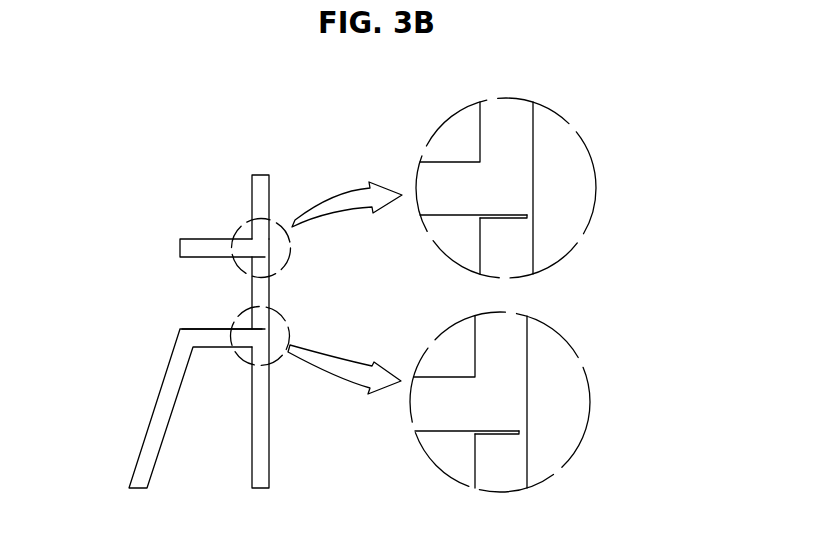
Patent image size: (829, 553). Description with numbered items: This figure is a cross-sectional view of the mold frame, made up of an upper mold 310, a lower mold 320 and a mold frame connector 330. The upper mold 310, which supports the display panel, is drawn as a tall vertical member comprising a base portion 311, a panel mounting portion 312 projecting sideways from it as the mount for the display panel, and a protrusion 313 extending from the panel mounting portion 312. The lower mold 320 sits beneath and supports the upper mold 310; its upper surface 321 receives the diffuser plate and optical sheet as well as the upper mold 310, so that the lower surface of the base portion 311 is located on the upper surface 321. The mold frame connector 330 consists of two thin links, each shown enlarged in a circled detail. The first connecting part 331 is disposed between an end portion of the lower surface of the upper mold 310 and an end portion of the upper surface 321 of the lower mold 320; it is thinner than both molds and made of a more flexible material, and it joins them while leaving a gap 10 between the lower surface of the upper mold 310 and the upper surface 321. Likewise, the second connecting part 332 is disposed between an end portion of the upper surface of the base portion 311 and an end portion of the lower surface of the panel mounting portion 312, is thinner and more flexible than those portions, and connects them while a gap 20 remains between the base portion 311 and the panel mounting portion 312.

The upper mold 310 is at (165, 326).
The base portion 311 is at (262, 285).
The panel mounting portion 312 is at (208, 245).
The protrusion 313 is at (262, 190).
The lower mold 320 is at (263, 430).
The upper surface 321 is at (194, 328).
The mold frame connector 330 is at (554, 364).
The first connecting part 331 is at (559, 401).
The second connecting part 332 is at (527, 218).
The gap 20 is at (503, 218).
The gap 10 is at (497, 433).